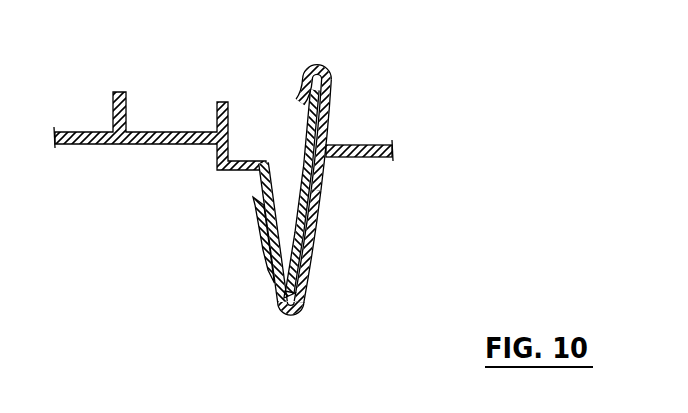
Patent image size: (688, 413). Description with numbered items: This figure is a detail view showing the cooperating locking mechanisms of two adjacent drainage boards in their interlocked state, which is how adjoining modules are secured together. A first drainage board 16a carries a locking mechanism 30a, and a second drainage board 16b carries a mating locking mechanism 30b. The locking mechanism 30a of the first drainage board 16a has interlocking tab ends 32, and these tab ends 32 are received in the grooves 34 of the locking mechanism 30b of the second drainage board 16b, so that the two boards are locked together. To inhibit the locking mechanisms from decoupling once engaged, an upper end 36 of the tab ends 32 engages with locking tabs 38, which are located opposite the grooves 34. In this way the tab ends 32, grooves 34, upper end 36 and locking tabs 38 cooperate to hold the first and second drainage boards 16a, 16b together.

The first drainage board 16a is at (85, 145).
The second drainage board 16b is at (308, 282).
The locking mechanism of the first drainage board 30a is at (302, 158).
The locking mechanism of the second drainage board 30b is at (322, 185).
The tab ends 32 is at (258, 237).
The grooves 34 is at (274, 284).
The upper end 36 is at (323, 103).
The locking tabs 38 is at (295, 92).